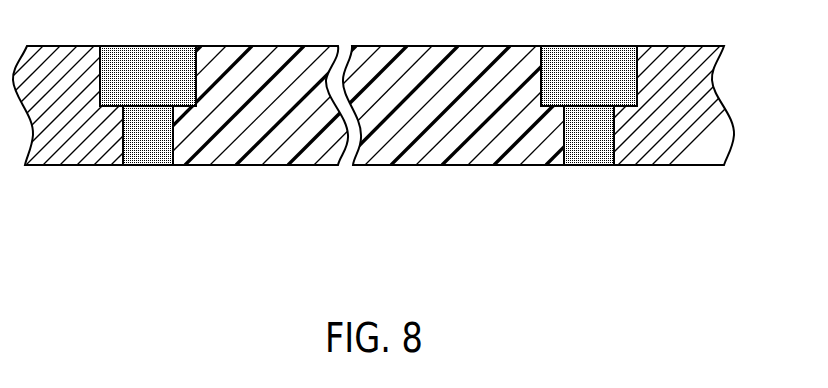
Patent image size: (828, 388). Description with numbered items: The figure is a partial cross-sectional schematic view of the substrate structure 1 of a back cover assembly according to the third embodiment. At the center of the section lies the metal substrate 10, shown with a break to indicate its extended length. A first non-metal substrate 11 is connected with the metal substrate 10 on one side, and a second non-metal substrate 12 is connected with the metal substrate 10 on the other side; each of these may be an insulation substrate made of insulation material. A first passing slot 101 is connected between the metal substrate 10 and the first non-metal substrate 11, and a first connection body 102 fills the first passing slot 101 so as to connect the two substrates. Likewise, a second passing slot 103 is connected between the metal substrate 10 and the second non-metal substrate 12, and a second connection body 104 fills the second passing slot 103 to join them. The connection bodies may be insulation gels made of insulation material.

The substrate structure 1 is at (394, 151).
The metal substrate 10 is at (376, 143).
The first non-metal substrate 11 is at (650, 152).
The second non-metal substrate 12 is at (90, 150).
The first passing slot 101 is at (542, 82).
The first connection body 102 is at (588, 82).
The second passing slot 103 is at (106, 82).
The second connection body 104 is at (148, 82).